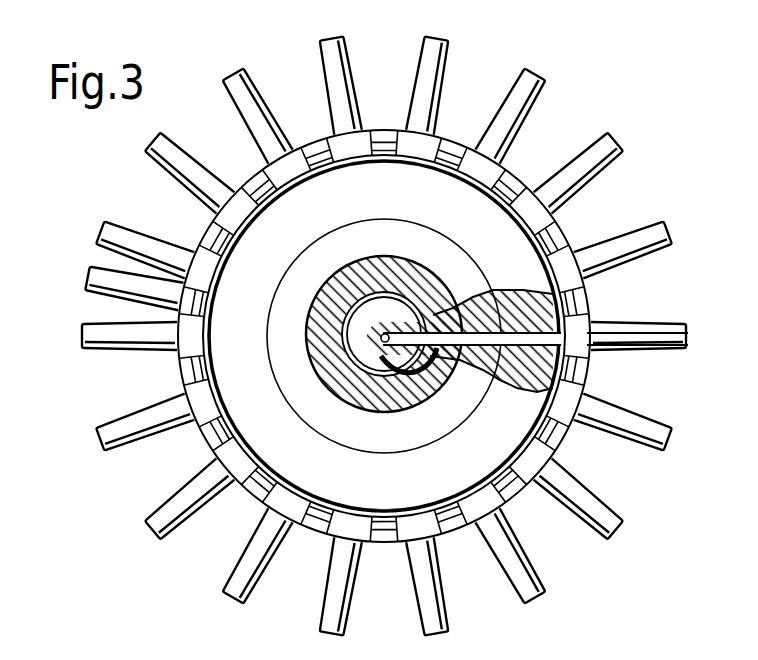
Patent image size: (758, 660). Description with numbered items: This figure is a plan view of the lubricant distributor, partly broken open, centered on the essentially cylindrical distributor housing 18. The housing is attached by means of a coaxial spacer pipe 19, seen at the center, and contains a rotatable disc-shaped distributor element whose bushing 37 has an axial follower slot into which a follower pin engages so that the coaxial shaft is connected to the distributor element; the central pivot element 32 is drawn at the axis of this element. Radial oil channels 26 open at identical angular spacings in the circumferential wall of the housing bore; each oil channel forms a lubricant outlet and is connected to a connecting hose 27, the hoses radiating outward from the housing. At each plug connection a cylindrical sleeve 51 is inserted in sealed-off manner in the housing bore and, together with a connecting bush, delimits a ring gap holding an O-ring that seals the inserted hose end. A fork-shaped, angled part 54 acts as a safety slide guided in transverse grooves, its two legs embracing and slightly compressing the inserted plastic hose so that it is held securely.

The distributor housing 18 is at (233, 397).
The spacer pipe 19 is at (400, 263).
The radial oil channel 26 is at (498, 372).
The connecting hose 27 is at (612, 150).
The pivot pin 32 is at (385, 346).
The bushing 37 is at (292, 352).
The cylindrical sleeve 51 is at (588, 398).
The angled part 54 is at (433, 134).